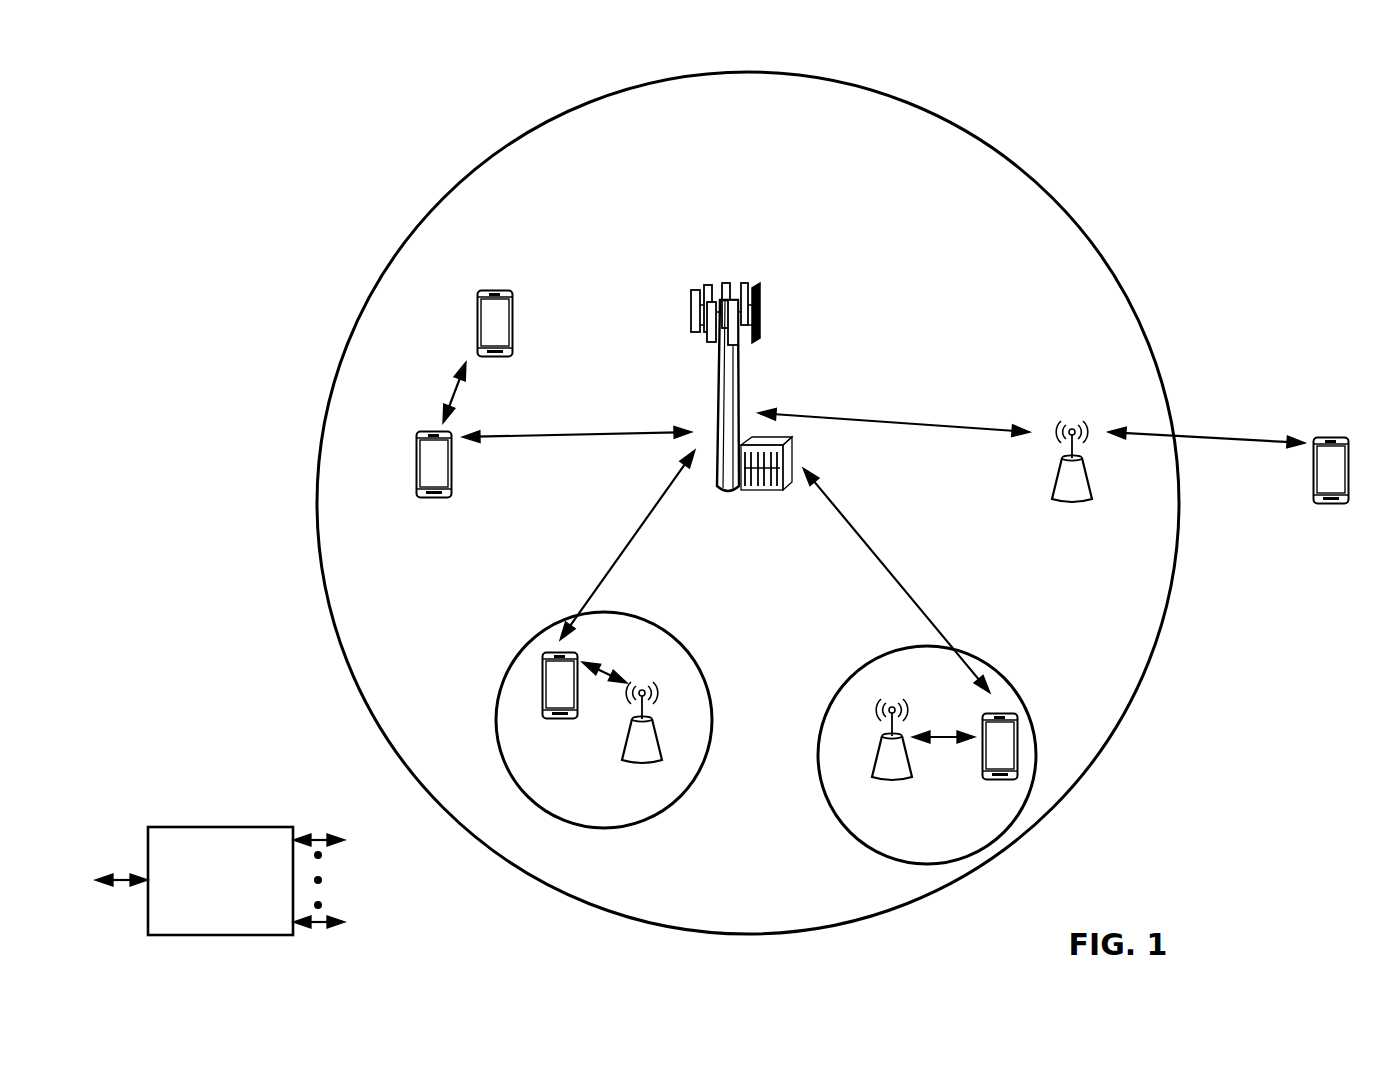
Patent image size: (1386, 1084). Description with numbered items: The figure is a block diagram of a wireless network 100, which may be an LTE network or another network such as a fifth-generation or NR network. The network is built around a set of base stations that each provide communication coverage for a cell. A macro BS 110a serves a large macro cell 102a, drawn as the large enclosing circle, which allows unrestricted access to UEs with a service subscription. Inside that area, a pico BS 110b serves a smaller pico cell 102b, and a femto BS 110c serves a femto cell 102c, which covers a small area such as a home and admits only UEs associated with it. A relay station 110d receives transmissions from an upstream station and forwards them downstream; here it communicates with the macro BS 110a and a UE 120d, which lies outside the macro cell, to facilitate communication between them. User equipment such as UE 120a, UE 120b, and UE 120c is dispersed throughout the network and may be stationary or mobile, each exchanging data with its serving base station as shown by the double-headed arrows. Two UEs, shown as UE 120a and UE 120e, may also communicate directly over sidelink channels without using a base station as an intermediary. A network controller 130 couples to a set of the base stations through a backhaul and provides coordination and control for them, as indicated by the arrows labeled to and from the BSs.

The wireless network 100 is at (196, 64).
The macro cell 102a is at (1031, 172).
The pico cell 102b is at (698, 652).
The femto cell 102c is at (862, 668).
The macro BS 110a is at (736, 282).
The pico BS 110b is at (662, 758).
The femto BS 110c is at (876, 764).
The relay station 110d is at (1072, 426).
The UE 120a is at (416, 464).
The UE 120b is at (548, 721).
The UE 120c is at (985, 783).
The UE 120d is at (1345, 437).
The UE 120e is at (476, 309).
The network controller 130 is at (218, 827).